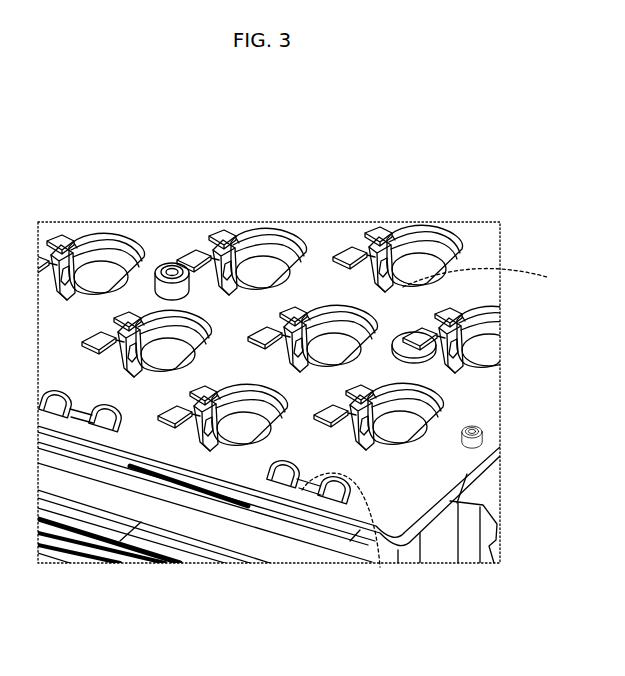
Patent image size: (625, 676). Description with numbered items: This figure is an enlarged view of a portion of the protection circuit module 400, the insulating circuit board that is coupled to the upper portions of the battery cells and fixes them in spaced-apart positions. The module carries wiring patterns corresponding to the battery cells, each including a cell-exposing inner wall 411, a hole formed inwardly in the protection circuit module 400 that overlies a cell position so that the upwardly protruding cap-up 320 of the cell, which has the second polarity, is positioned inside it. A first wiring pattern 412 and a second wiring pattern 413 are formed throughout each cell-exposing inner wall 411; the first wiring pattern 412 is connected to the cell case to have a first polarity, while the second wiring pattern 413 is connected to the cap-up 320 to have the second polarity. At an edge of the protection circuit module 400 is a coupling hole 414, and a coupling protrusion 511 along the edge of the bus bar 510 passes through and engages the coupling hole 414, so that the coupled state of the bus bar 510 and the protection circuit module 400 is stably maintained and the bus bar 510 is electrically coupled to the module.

The protection circuit module 400 is at (527, 188).
The cell-exposing inner wall 411 is at (445, 237).
The first wiring pattern 412 is at (365, 227).
The second wiring pattern 413 is at (342, 252).
The coupling hole 414 is at (360, 483).
The cap-up 320 is at (495, 279).
The bus bar 510 is at (294, 562).
The coupling protrusion 511 is at (380, 567).